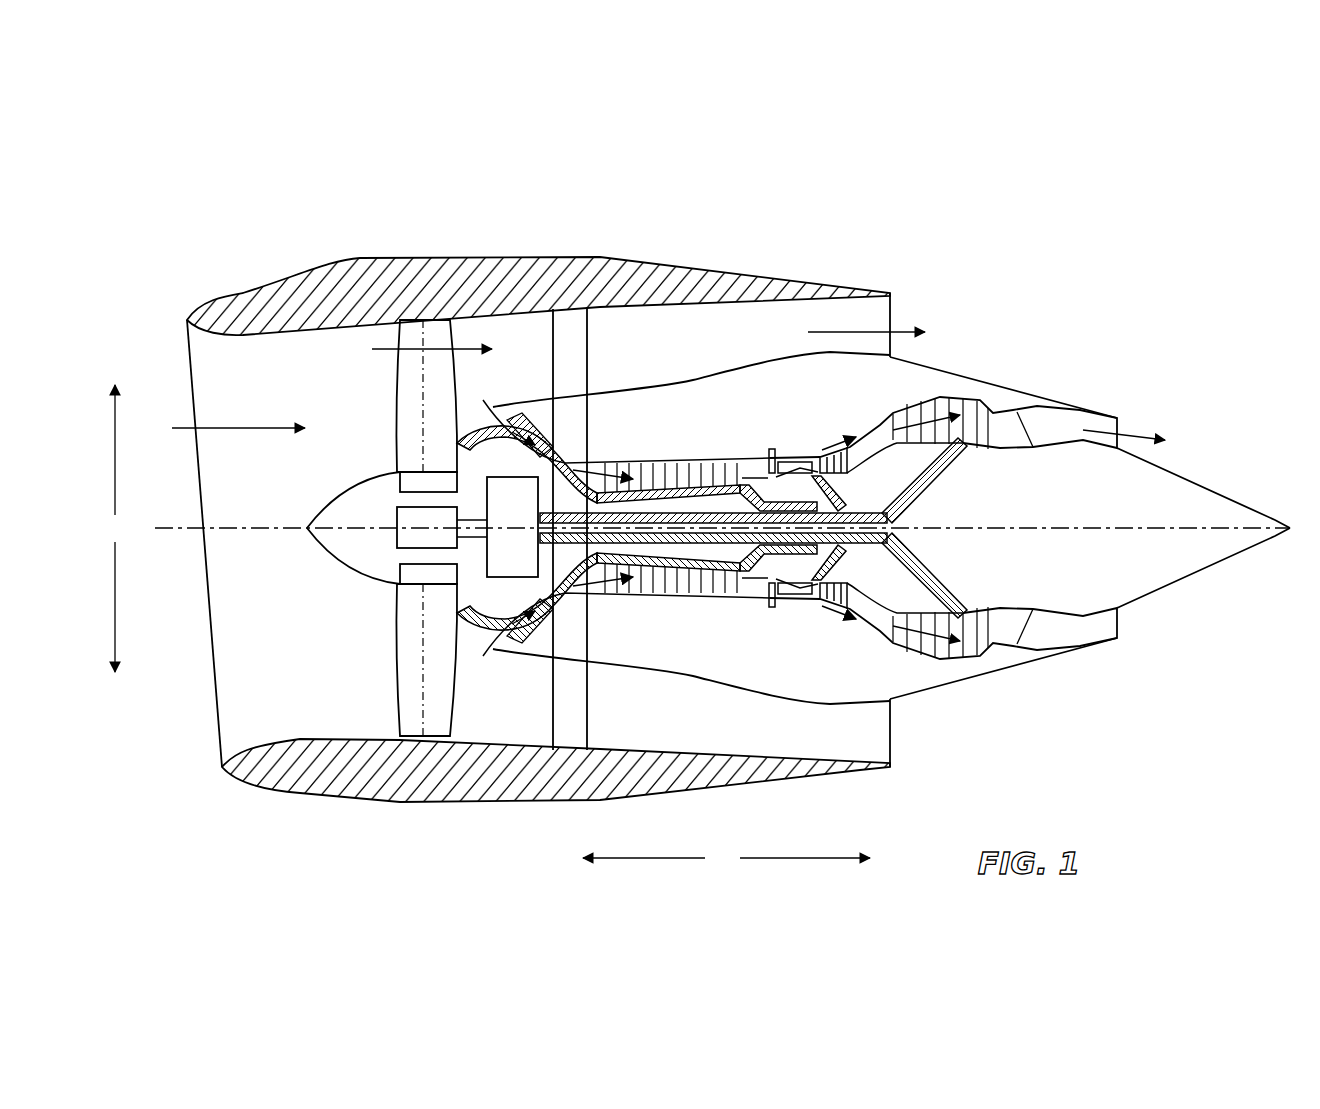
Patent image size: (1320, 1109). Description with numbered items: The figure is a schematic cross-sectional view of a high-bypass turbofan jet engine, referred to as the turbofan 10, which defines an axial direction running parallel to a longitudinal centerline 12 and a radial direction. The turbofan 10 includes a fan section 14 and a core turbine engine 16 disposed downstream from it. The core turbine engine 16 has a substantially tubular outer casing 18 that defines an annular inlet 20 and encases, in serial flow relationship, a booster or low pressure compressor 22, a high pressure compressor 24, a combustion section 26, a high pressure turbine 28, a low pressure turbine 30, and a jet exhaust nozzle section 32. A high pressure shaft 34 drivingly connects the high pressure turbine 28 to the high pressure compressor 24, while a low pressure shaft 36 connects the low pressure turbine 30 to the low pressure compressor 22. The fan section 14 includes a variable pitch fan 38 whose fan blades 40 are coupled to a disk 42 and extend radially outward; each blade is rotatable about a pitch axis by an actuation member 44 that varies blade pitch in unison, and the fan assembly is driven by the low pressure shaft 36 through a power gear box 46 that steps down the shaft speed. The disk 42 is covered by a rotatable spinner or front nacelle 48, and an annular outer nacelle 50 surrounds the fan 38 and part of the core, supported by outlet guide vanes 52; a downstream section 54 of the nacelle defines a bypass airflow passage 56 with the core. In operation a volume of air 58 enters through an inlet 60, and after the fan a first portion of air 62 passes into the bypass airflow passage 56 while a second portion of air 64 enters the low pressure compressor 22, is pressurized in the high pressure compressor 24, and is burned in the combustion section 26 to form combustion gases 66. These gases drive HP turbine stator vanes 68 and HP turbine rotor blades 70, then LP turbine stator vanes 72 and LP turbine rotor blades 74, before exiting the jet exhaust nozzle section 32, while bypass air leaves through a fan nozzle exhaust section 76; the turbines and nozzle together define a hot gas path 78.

The turbofan 10 is at (1033, 270).
The longitudinal centerline 12 is at (1057, 525).
The fan section 14 is at (443, 227).
The core turbine engine 16 is at (757, 423).
The outer casing 18 is at (747, 690).
The annular inlet 20 is at (490, 645).
The low pressure compressor 22 is at (547, 597).
The high pressure compressor 24 is at (620, 590).
The combustion section 26 is at (790, 597).
The high pressure turbine 28 is at (873, 595).
The low pressure turbine 30 is at (973, 657).
The jet exhaust nozzle section 32 is at (1037, 637).
The high pressure shaft 34 is at (838, 497).
The low pressure shaft 36 is at (927, 487).
The variable pitch fan 38 is at (362, 582).
The fan blades 40 is at (397, 678).
The disk 42 is at (417, 482).
The actuation member 44 is at (397, 510).
The power gear box 46 is at (527, 488).
The front nacelle 48 is at (393, 543).
The outer nacelle 50 is at (462, 802).
The outlet guide vanes 52 is at (590, 338).
The downstream section 54 is at (522, 554).
The bypass airflow passage 56 is at (702, 341).
The volume of air 58 is at (240, 427).
The inlet 60 is at (213, 747).
The first portion of air 62 is at (400, 345).
The second portion of air 64 is at (473, 420).
The combustion gases 66 is at (937, 400).
The HP turbine stator vanes 68 is at (807, 597).
The HP turbine rotor blades 70 is at (880, 562).
The LP turbine stator vanes 72 is at (897, 640).
The LP turbine rotor blades 74 is at (913, 653).
The fan nozzle exhaust section 76 is at (880, 315).
The hot gas path 78 is at (880, 430).